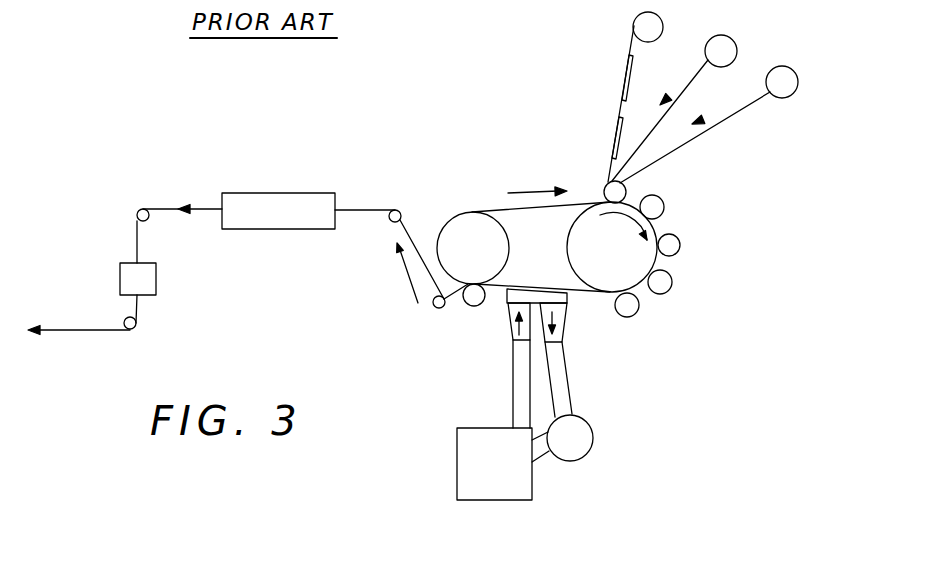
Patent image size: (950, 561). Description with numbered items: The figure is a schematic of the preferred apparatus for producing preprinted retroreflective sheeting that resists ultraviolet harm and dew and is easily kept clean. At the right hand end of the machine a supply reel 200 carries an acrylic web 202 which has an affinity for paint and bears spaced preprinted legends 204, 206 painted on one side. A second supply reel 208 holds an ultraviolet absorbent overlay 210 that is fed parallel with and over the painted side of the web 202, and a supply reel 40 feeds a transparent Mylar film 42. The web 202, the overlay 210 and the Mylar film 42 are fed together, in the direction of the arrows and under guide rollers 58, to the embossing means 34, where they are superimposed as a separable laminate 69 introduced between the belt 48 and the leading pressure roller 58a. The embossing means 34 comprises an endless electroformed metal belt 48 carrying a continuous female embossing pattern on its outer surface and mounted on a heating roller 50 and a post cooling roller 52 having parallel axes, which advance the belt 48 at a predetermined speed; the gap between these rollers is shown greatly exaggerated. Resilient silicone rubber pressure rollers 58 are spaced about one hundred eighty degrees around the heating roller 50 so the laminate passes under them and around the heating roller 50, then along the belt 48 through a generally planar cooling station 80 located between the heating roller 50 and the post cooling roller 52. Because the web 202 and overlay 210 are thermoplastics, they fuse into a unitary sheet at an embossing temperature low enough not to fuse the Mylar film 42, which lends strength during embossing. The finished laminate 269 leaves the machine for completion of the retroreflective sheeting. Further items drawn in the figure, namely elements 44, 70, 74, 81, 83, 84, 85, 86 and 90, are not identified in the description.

The embossing means 34 is at (548, 242).
The supply reel 40 is at (785, 90).
The Mylar film 42 is at (720, 104).
The guide rollers 44 is at (138, 213).
The endless electroformed metal belt 48 is at (503, 207).
The heating roller 50 is at (624, 262).
The post cooling roller 52 is at (488, 262).
The pressure rollers 58 is at (663, 207).
The leading pressure roller 58a is at (625, 183).
The separable laminate 69 is at (679, 236).
The guide roller 70 is at (476, 307).
The processing station 74 is at (143, 278).
The cooling station 80 is at (600, 340).
The air header 81 is at (542, 297).
The blower unit 83 is at (512, 472).
The supply duct 84 is at (515, 387).
The return duct 85 is at (561, 388).
The fan 86 is at (578, 446).
The treatment station 90 is at (280, 202).
The supply reel 200 is at (634, 23).
The acrylic web 202 is at (625, 45).
The preprinted legend 204 is at (633, 78).
The preprinted legend 206 is at (625, 133).
The supply reel 208 is at (736, 48).
The ultraviolet absorbent overlay 210 is at (693, 60).
The laminate 269 is at (362, 210).